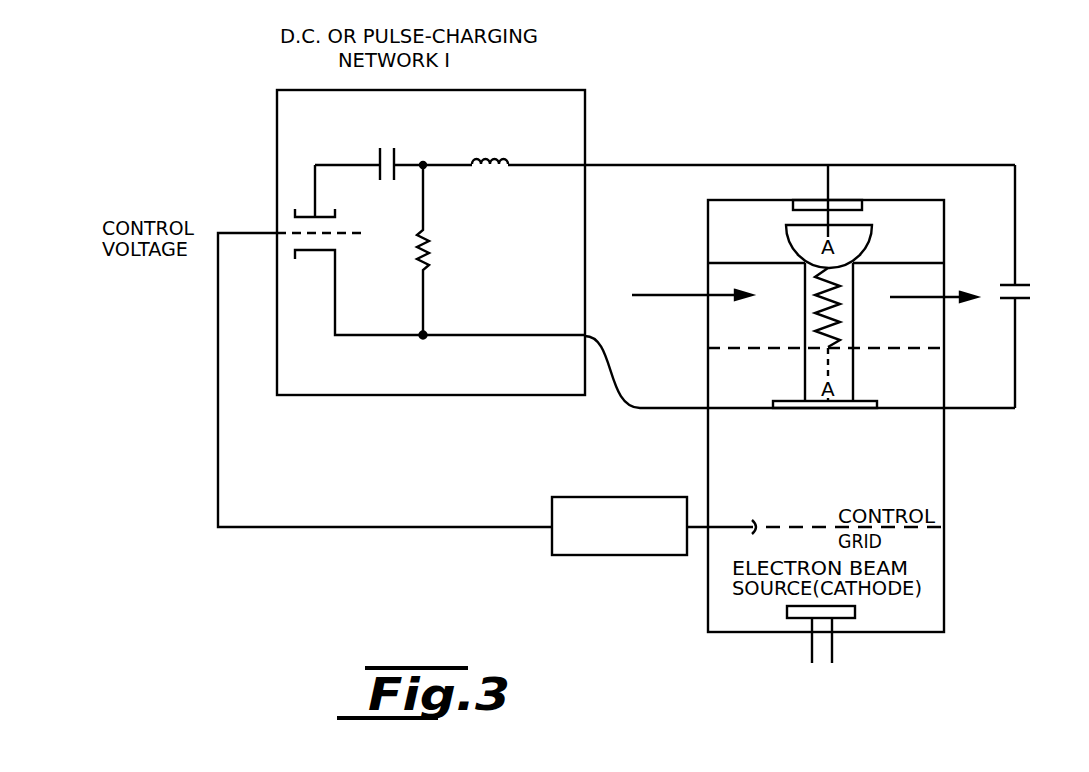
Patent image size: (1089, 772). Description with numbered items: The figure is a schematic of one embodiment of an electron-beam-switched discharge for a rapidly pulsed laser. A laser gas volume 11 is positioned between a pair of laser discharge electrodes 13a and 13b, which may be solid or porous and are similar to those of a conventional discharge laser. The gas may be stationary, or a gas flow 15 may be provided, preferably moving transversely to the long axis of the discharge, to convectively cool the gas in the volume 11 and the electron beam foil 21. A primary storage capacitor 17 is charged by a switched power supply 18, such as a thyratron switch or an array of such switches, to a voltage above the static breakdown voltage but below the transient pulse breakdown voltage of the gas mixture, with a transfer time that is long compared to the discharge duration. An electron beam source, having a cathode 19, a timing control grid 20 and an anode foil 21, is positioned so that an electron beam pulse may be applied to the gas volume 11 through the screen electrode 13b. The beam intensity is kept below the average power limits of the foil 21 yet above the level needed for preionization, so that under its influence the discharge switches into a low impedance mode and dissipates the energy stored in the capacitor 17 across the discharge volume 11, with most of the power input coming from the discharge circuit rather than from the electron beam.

The switched power supply 18 is at (554, 90).
The primary storage capacitor 17 is at (1026, 283).
The laser discharge electrode 13a is at (867, 238).
The laser discharge electrode (screen electrode) 13b is at (812, 360).
The laser gas volume 11 is at (838, 302).
The anode foil 21 is at (780, 411).
The gas flow 15 is at (697, 298).
The timing control grid 20 is at (622, 558).
The cathode 19 is at (792, 620).